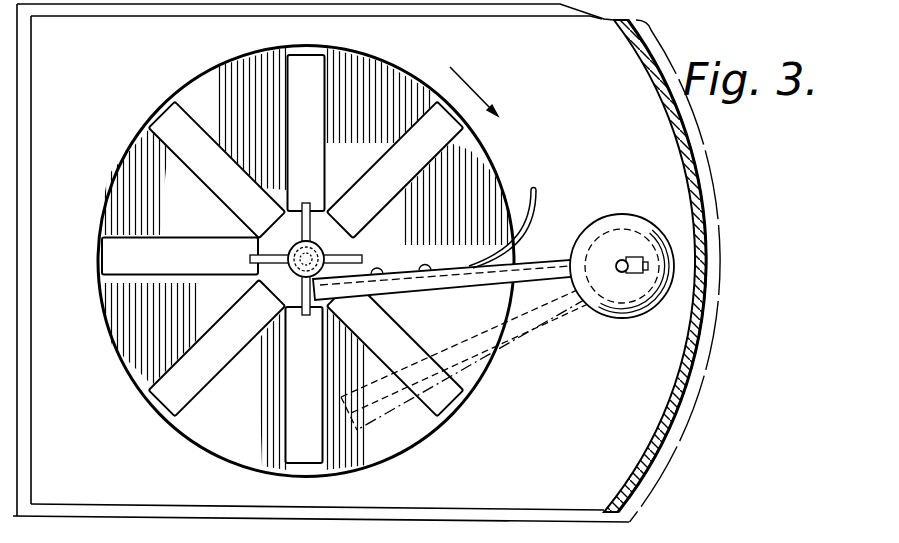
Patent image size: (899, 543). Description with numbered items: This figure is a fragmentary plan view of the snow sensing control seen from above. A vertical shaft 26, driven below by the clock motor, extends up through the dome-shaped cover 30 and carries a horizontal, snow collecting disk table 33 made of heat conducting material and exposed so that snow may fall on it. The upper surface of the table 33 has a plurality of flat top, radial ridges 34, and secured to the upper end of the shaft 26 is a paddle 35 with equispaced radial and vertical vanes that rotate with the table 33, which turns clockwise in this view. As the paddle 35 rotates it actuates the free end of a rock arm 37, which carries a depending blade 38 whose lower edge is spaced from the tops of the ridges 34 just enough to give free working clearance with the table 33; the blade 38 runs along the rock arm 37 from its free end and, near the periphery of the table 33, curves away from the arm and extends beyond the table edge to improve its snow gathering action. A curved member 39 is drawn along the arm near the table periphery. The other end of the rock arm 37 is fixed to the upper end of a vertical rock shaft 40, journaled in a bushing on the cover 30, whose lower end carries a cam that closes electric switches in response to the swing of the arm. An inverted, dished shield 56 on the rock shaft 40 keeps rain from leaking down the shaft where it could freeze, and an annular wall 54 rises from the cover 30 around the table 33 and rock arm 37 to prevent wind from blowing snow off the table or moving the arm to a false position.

The vertical shaft 26 is at (287, 264).
The dome-shaped cover 30 is at (548, 462).
The disk table 33 is at (200, 74).
The radial ridges 34 is at (170, 112).
The paddle 35 is at (302, 224).
The rock arm 37 is at (438, 290).
The blade 38 is at (402, 275).
The spring strip 39 is at (539, 193).
The rock shaft 40 is at (697, 283).
The annular wall 54 is at (670, 130).
The dished shield 56 is at (630, 205).